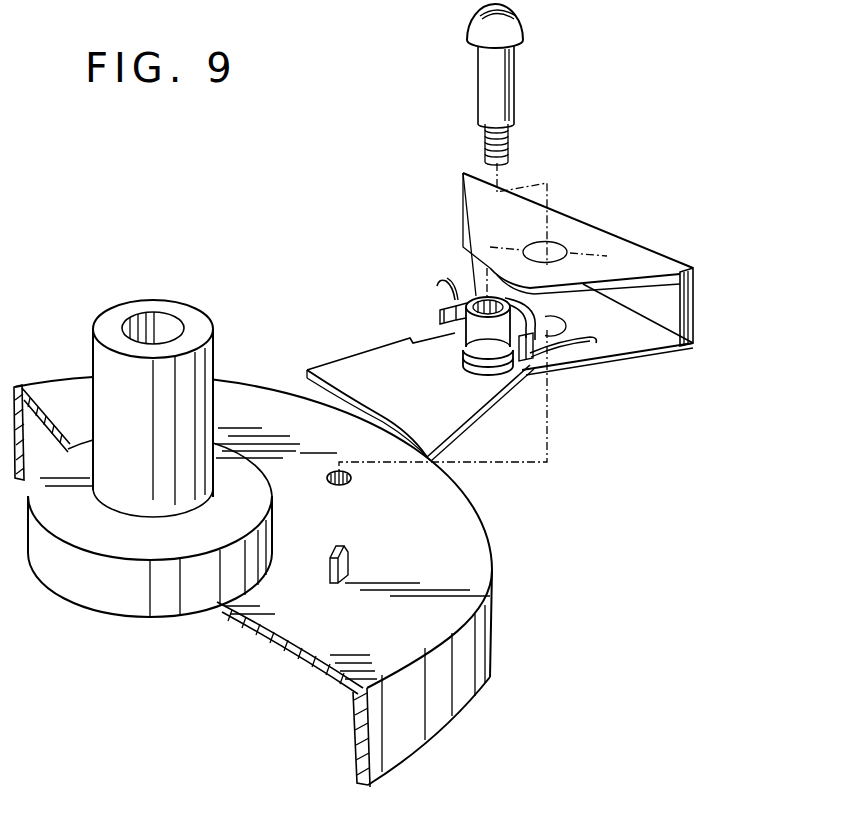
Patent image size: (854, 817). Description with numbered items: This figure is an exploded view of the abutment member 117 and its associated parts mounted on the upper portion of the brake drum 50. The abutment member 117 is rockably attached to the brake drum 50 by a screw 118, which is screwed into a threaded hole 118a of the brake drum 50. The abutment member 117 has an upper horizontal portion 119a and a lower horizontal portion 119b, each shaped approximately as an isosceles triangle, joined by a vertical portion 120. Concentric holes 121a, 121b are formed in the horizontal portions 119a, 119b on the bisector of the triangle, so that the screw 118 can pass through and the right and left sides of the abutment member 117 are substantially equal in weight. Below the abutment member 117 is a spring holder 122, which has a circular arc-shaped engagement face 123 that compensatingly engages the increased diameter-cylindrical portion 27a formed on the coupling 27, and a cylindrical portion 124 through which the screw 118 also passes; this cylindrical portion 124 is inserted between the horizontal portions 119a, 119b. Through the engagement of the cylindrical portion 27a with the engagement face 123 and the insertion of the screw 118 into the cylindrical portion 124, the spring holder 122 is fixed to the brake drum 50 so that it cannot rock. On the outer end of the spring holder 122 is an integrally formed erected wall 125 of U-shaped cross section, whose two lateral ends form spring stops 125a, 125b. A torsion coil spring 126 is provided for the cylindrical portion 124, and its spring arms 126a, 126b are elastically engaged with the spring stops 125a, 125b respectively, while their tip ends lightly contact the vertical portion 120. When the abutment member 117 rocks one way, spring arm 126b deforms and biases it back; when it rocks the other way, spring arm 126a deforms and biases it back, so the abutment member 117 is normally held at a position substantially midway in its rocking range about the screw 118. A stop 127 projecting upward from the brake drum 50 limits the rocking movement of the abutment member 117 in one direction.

The screw 118 is at (483, 82).
The abutment member 117 is at (578, 280).
The upper horizontal portion 119a is at (578, 234).
The lower horizontal portion 119b is at (607, 336).
The vertical portion 120 is at (636, 302).
The hole 121a is at (534, 245).
The hole 121b is at (566, 327).
The spring holder 122 is at (418, 394).
The engagement face 123 is at (347, 387).
The cylindrical portion 124 is at (473, 334).
The erected wall 125 is at (486, 363).
The spring stop 125a is at (548, 372).
The spring stop 125b is at (452, 329).
The torsion coil spring 126 is at (494, 340).
The spring arm 126a is at (570, 346).
The spring arm 126b is at (437, 290).
The coupling 27 is at (92, 416).
The increased diameter-cylindrical portion 27a is at (189, 598).
The brake drum 50 is at (480, 575).
The threaded hole 118a is at (350, 477).
The stop 127 is at (347, 556).